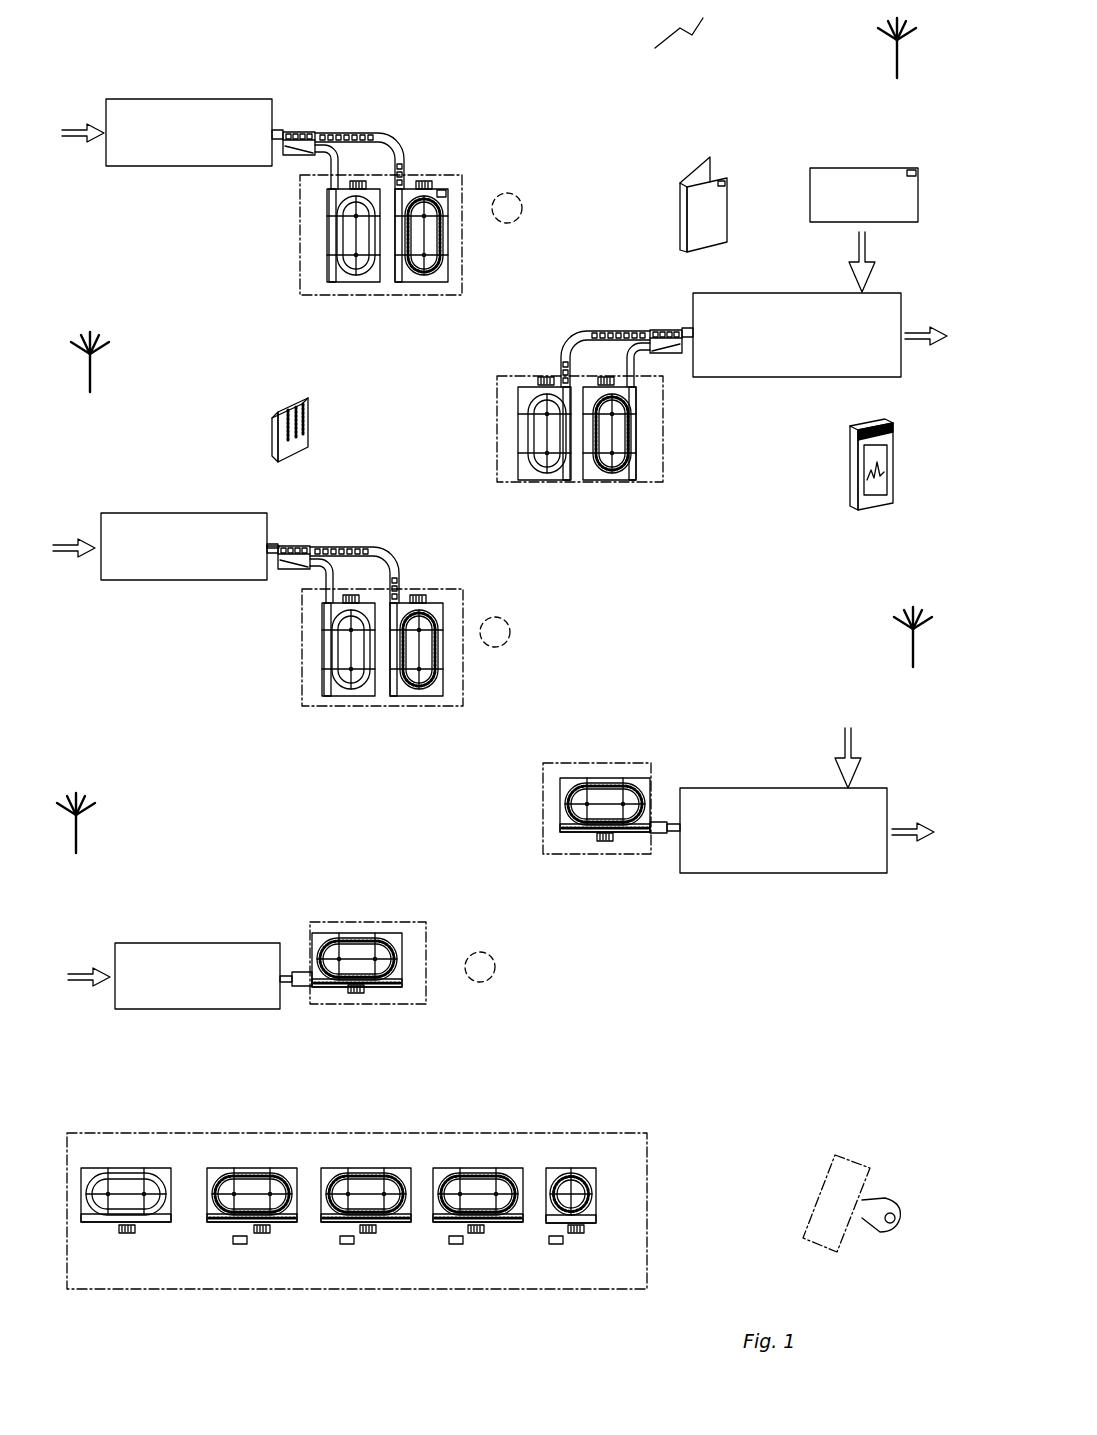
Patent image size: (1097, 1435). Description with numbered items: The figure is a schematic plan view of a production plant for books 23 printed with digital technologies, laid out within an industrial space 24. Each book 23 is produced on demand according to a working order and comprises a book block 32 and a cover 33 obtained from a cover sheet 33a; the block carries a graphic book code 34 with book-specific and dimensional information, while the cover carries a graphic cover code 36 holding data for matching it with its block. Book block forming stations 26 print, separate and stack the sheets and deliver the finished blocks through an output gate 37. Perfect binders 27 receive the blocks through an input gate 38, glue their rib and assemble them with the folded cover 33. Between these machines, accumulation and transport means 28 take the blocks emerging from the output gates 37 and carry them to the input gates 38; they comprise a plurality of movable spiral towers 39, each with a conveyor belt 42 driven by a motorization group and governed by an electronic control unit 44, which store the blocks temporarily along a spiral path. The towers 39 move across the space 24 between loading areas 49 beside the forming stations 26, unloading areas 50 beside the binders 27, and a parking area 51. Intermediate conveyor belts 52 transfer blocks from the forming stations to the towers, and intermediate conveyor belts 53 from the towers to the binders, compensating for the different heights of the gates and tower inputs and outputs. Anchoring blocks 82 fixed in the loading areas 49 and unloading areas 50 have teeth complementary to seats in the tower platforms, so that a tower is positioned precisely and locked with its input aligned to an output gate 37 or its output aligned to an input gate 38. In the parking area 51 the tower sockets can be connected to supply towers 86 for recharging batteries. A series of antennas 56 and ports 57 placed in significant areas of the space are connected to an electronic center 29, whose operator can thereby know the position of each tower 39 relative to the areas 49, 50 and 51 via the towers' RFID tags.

The book 23 is at (831, 443).
The industrial space 24 is at (780, 1005).
The book block forming station 26 is at (198, 92).
The perfect binder 27 is at (764, 173).
The accumulation and transport means 28 is at (522, 92).
The electronic center 29 is at (810, 1178).
The book block 32 is at (280, 412).
The cover 33 is at (664, 215).
The cover sheet 33a is at (824, 228).
The book code 34 is at (303, 418).
The cover code 36 is at (722, 181).
The output gate 37 is at (284, 130).
The input gate 38 is at (690, 320).
The spiral tower 39 is at (430, 285).
The conveyor belt 42 is at (447, 259).
The electronic control unit 44 is at (448, 196).
The loading area 49 is at (292, 249).
The unloading area 50 is at (666, 472).
The parking area 51 is at (438, 1131).
The intermediate conveyor belt 52 is at (300, 988).
The intermediate conveyor belt 53 is at (658, 822).
The antenna 56 is at (899, 48).
The port 57 is at (515, 203).
The anchoring block 82 is at (446, 183).
The supply tower 86 is at (574, 1240).